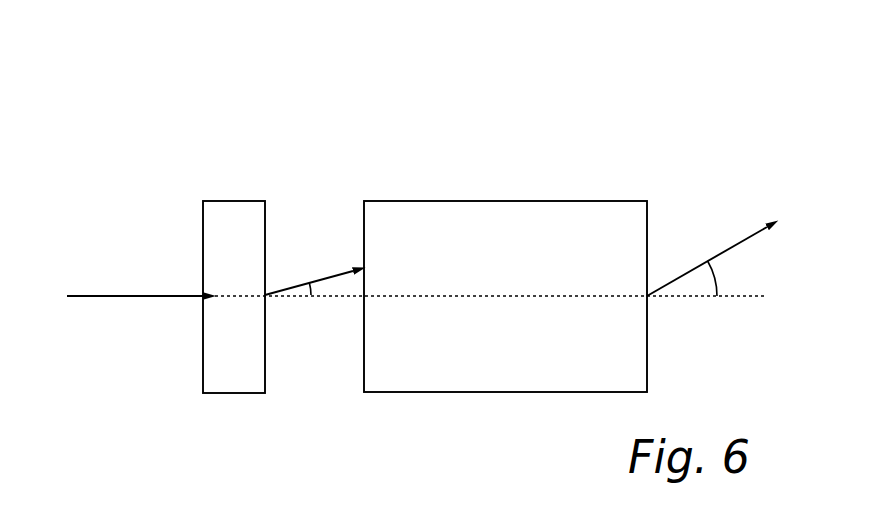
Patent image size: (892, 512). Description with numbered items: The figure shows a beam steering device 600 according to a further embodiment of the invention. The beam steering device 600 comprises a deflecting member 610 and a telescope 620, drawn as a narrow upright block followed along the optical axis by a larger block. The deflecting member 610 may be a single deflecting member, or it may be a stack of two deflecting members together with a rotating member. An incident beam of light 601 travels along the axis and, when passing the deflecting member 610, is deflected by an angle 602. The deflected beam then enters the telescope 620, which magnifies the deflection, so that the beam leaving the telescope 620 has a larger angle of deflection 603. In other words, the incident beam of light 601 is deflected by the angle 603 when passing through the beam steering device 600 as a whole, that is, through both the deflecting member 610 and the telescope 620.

The beam steering device 600 is at (660, 66).
The incident beam of light 601 is at (128, 295).
The angle 602 is at (305, 291).
The angle of deflection 603 is at (690, 287).
The deflecting member 610 is at (233, 200).
The telescope 620 is at (517, 200).